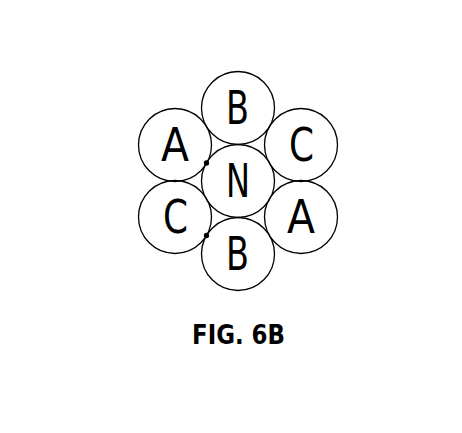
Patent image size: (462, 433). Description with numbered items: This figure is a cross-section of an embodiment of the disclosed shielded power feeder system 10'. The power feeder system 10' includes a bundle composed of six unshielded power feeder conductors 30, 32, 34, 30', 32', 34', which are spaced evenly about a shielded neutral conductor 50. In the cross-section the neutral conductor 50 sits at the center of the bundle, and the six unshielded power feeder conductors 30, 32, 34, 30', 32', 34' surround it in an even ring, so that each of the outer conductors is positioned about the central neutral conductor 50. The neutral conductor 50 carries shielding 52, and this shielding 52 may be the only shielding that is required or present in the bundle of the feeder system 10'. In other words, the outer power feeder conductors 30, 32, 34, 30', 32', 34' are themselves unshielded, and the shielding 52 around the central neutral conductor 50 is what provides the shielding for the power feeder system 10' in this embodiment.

The power feeder system 10' is at (331, 186).
The unshielded power feeder conductor 30 is at (151, 133).
The unshielded power feeder conductor 30' is at (339, 220).
The unshielded power feeder conductor 32 is at (264, 268).
The unshielded power feeder conductor 32' is at (268, 96).
The unshielded power feeder conductor 34 is at (334, 140).
The unshielded power feeder conductor 34' is at (132, 224).
The shielded neutral conductor 50 is at (225, 212).
The shielding 52 is at (205, 178).